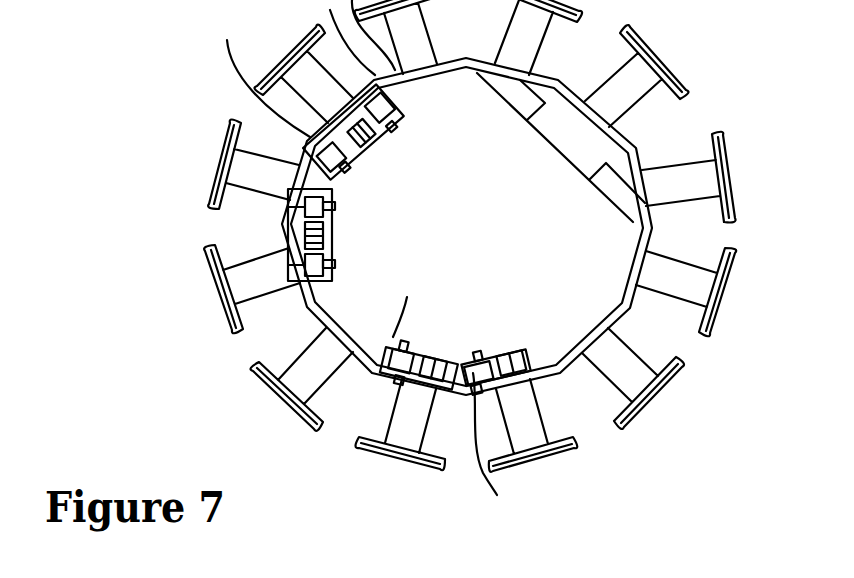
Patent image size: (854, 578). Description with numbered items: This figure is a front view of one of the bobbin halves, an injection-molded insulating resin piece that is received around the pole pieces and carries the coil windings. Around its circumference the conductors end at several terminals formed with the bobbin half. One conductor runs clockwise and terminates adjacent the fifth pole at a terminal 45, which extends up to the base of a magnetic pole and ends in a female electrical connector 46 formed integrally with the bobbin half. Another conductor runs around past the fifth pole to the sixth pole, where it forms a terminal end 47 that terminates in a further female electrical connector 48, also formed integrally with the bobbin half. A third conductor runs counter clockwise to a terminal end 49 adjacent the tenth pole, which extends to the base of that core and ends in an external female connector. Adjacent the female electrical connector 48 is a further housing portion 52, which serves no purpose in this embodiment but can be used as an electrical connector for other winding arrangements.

The terminal 45 is at (503, 345).
The female electrical connector 46 is at (560, 377).
The terminal end 47 is at (455, 380).
The female electrical connector 48 is at (367, 373).
The terminal end 49 is at (363, 148).
The housing portion 52 is at (336, 249).